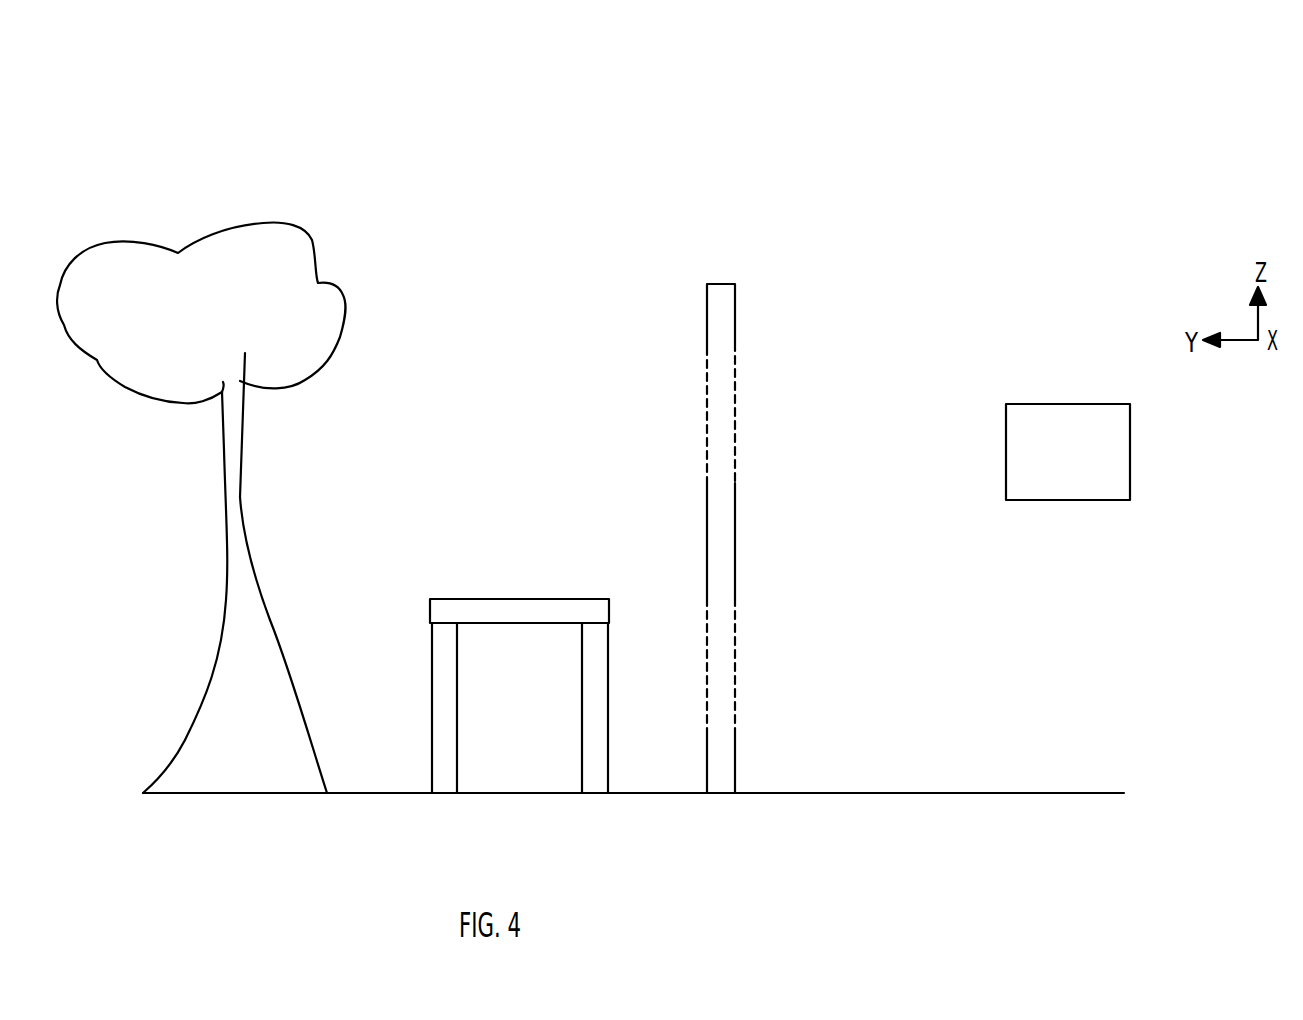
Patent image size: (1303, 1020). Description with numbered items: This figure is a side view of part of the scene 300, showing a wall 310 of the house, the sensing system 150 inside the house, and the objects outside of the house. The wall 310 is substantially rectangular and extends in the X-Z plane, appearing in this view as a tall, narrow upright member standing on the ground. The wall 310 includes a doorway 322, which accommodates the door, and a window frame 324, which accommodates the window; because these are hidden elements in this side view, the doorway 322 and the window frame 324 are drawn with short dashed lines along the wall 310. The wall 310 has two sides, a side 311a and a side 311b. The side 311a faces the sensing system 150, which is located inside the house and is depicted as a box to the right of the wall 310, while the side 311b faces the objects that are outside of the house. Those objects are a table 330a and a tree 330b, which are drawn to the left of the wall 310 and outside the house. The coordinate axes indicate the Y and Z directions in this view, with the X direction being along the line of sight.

The scene 300 is at (633, 402).
The wall 310 is at (719, 495).
The window frame 324 is at (723, 418).
The doorway 322 is at (718, 665).
The side 311a is at (735, 535).
The side 311b is at (707, 537).
The table 330a is at (497, 597).
The tree 330b is at (201, 508).
The sensing system 150 is at (1068, 452).